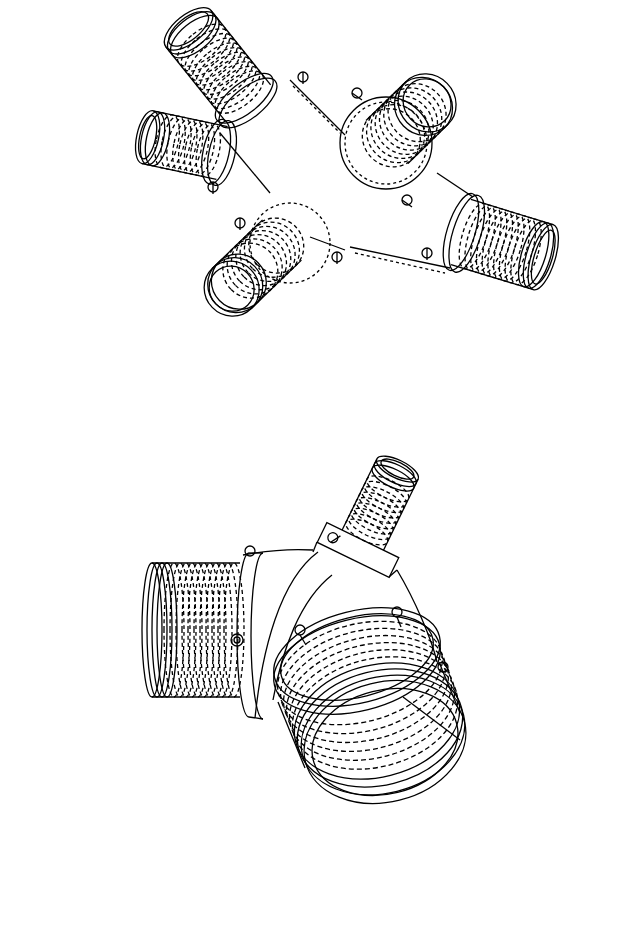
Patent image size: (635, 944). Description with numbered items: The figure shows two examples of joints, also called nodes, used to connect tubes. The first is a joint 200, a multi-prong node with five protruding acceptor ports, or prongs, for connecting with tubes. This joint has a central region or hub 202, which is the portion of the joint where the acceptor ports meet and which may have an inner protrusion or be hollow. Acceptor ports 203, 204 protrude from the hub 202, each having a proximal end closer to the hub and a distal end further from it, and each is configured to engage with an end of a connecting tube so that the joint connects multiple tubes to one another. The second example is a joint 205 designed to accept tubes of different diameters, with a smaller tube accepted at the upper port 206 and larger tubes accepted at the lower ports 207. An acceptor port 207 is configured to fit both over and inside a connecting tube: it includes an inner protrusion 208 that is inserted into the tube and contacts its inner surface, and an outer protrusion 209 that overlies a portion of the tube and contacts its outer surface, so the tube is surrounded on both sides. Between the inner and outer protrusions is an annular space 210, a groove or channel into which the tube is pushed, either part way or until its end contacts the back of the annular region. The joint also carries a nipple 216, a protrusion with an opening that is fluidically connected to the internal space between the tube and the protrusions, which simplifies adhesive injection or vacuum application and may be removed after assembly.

In FIG. 2A, the joint 200 is at (183, 230).
In FIG. 2A, the hub 202 is at (347, 212).
In FIG. 2A, the acceptor port 203 is at (429, 125).
In FIG. 2A, the acceptor port 204 is at (255, 287).
In FIG. 2C, the joint 205 is at (423, 577).
In FIG. 2C, the upper port 206 is at (346, 507).
In FIG. 2C, the lower port 207 is at (440, 726).
In FIG. 2C, the inner protrusion 208 is at (358, 753).
In FIG. 2C, the outer protrusion 209 is at (294, 696).
In FIG. 2C, the annular space 210 is at (324, 726).
In FIG. 2C, the nipple 216 is at (209, 582).